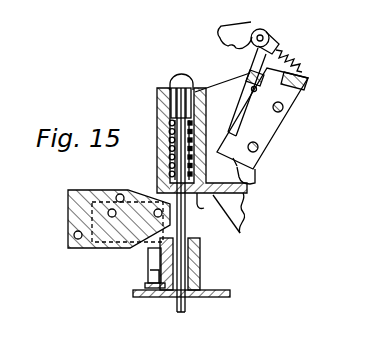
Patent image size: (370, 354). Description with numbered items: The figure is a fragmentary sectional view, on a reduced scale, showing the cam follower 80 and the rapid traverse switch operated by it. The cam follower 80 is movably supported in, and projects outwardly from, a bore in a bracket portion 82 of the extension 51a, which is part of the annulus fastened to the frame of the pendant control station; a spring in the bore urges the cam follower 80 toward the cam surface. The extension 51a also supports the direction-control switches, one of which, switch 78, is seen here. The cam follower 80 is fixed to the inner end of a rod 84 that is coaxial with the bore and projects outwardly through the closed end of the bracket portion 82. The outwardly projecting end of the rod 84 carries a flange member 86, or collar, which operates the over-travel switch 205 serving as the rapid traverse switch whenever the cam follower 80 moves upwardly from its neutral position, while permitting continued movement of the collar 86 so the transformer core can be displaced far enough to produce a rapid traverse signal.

The cam follower 80 is at (170, 87).
The extension of annulus 51a is at (224, 95).
The switch 78 is at (277, 128).
The rod 84 is at (166, 186).
The bracket portion 82 is at (221, 213).
The over-travel switch 205 is at (148, 264).
The flange member 86 is at (200, 278).